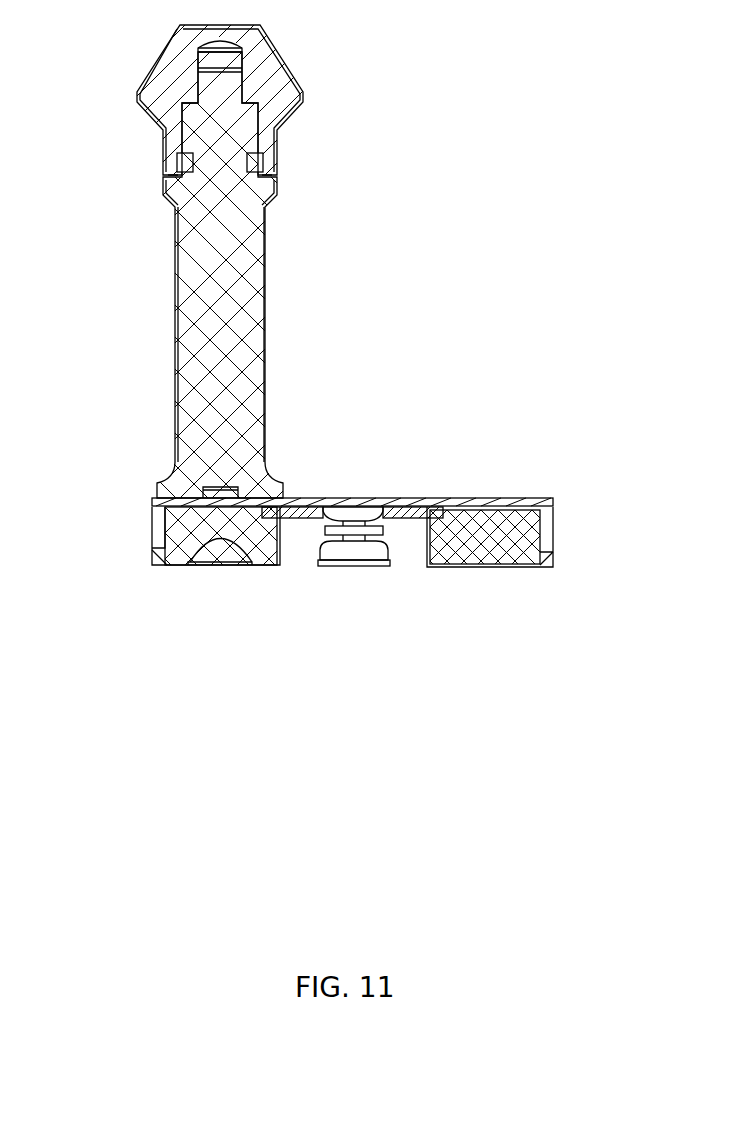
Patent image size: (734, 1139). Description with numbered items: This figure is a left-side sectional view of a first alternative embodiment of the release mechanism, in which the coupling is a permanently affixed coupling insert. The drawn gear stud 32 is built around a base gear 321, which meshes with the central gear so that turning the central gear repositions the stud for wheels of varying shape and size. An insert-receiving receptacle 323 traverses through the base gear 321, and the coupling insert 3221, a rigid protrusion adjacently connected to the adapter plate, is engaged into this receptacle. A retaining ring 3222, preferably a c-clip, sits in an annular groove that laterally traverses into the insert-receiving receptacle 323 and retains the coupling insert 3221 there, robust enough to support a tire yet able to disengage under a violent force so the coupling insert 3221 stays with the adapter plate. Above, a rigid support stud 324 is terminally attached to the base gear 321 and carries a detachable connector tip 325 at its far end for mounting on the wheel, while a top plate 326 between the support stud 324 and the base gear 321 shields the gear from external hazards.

The gear stud 32 is at (134, 260).
The base gear 321 is at (158, 533).
The insert-receiving receptacle 323 is at (302, 548).
The coupling insert 3221 is at (337, 567).
The retaining ring 3222 is at (413, 517).
The support stud 324 is at (265, 325).
The connector tip 325 is at (303, 100).
The top plate 326 is at (550, 503).